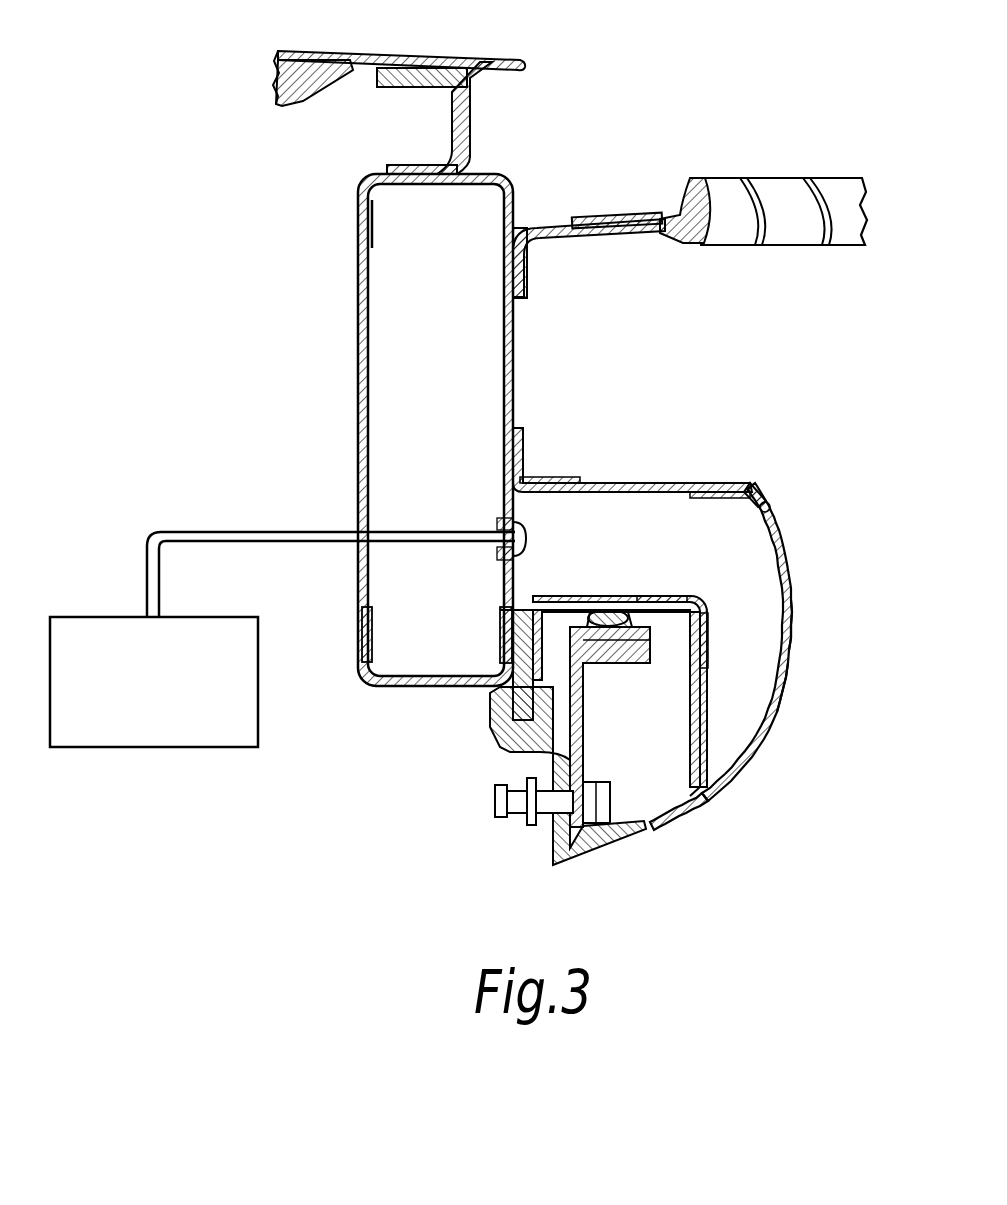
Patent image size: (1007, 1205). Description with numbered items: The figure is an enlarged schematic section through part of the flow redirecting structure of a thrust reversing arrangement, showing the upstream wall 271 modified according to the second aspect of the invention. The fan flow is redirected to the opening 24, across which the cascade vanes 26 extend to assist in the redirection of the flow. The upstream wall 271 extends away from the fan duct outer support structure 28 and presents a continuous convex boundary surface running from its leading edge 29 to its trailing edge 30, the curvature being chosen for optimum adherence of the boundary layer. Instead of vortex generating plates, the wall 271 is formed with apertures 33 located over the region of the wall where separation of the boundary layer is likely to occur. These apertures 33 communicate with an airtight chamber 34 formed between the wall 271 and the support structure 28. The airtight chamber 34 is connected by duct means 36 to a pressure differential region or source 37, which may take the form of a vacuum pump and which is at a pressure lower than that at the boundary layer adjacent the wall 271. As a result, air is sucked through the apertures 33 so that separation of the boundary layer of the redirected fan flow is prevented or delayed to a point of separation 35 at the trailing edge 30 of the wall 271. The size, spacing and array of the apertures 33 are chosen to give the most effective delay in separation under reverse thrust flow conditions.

The opening 24 is at (638, 138).
The cascade vanes 26 is at (820, 178).
The fan duct outer support structure 28 is at (500, 718).
The leading edge 29 is at (668, 828).
The trailing edge 30 is at (765, 538).
The apertures 33 is at (793, 595).
The airtight chamber 34 is at (593, 517).
The point of separation 35 is at (770, 503).
The duct means 36 is at (255, 540).
The pressure differential region or source 37 is at (165, 717).
The upstream wall 271 is at (760, 742).